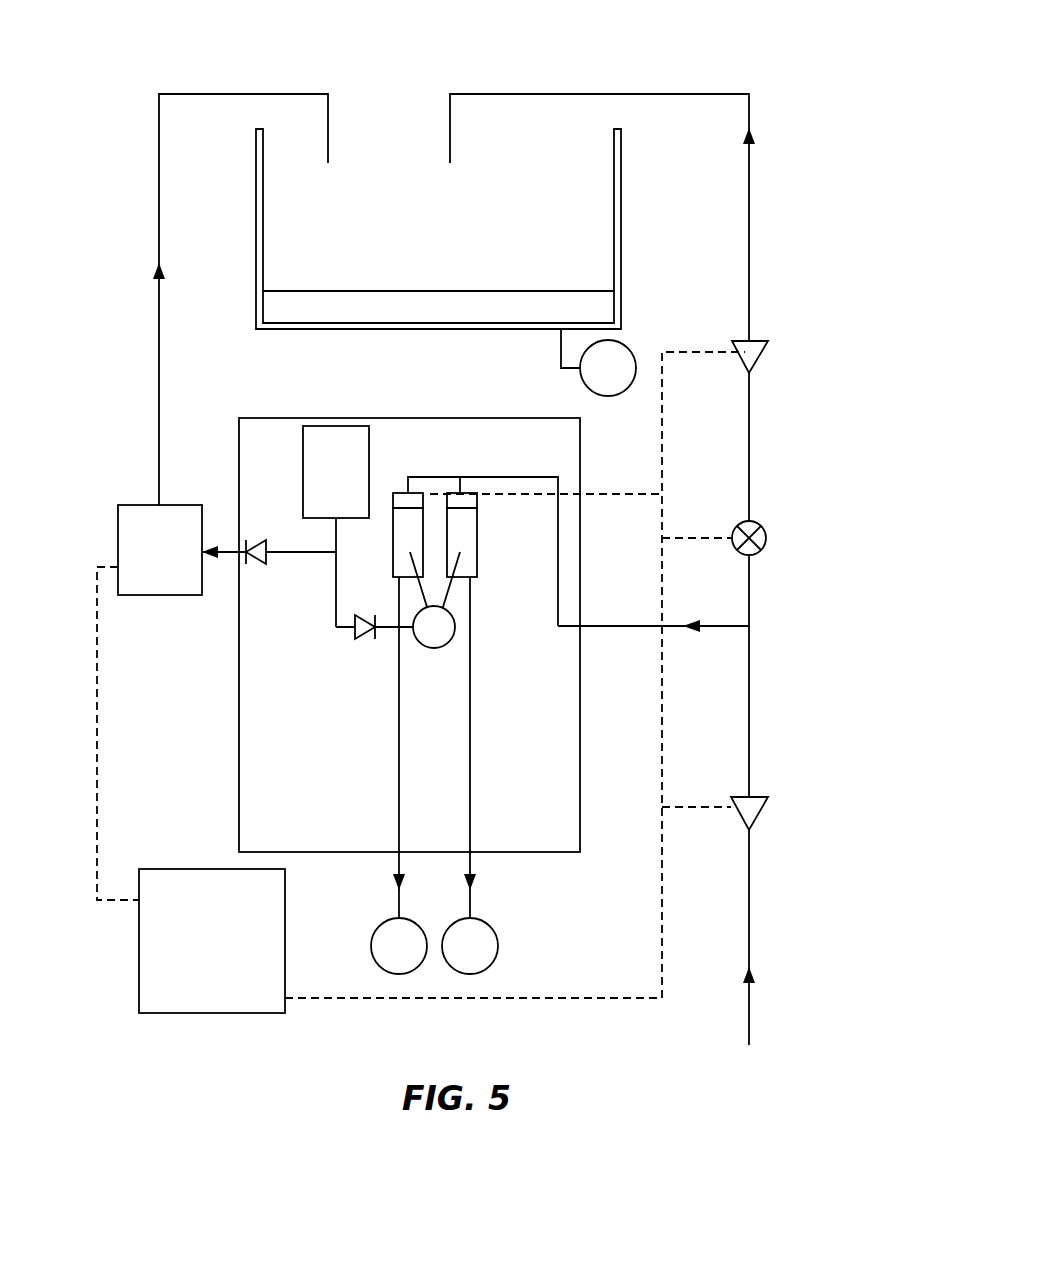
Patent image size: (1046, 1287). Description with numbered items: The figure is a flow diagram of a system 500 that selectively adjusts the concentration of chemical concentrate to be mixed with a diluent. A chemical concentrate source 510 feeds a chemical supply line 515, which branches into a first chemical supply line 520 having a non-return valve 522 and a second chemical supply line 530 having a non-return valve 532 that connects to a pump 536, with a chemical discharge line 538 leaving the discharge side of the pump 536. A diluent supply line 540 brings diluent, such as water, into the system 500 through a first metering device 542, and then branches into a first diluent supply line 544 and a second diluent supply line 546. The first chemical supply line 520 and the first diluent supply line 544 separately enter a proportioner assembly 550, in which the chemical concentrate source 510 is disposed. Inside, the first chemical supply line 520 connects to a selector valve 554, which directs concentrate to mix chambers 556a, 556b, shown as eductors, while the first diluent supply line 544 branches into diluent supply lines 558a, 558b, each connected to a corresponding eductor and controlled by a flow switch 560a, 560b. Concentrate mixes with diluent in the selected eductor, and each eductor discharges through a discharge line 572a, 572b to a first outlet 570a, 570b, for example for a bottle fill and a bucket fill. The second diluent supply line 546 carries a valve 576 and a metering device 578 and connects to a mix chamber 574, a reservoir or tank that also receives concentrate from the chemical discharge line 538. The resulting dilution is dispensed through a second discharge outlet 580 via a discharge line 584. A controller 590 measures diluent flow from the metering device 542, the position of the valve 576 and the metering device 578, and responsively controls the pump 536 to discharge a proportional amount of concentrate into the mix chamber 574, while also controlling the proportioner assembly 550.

The system 500 is at (820, 113).
The chemical concentrate source 510 is at (303, 448).
The chemical supply line 515 is at (333, 537).
The first chemical supply line 520 is at (333, 608).
The non-return valve 522 is at (370, 634).
The second chemical supply line 530 is at (302, 557).
The non-return valve 532 is at (254, 565).
The pump 536 is at (141, 505).
The chemical discharge line 538 is at (159, 409).
The diluent supply line 540 is at (750, 925).
The first metering device 542 is at (765, 808).
The first diluent supply line 544 is at (600, 625).
The second diluent supply line 546 is at (750, 597).
The proportioner assembly 550 is at (400, 418).
The selector valve 554 is at (442, 646).
The mix chamber 556a is at (480, 553).
The mix chamber 556b is at (388, 543).
The diluent supply line 558a is at (468, 486).
The diluent supply line 558b is at (417, 486).
The flow switch 560a is at (468, 500).
The flow switch 560b is at (402, 493).
The first outlet 570a is at (498, 942).
The first outlet 570b is at (371, 942).
The discharge line 572a is at (470, 753).
The discharge line 572b is at (399, 753).
The mix chamber 574 is at (614, 232).
The valve 576 is at (768, 540).
The metering device 578 is at (768, 352).
The second discharge outlet 580 is at (605, 396).
The discharge line 584 is at (561, 350).
The controller 590 is at (200, 1013).